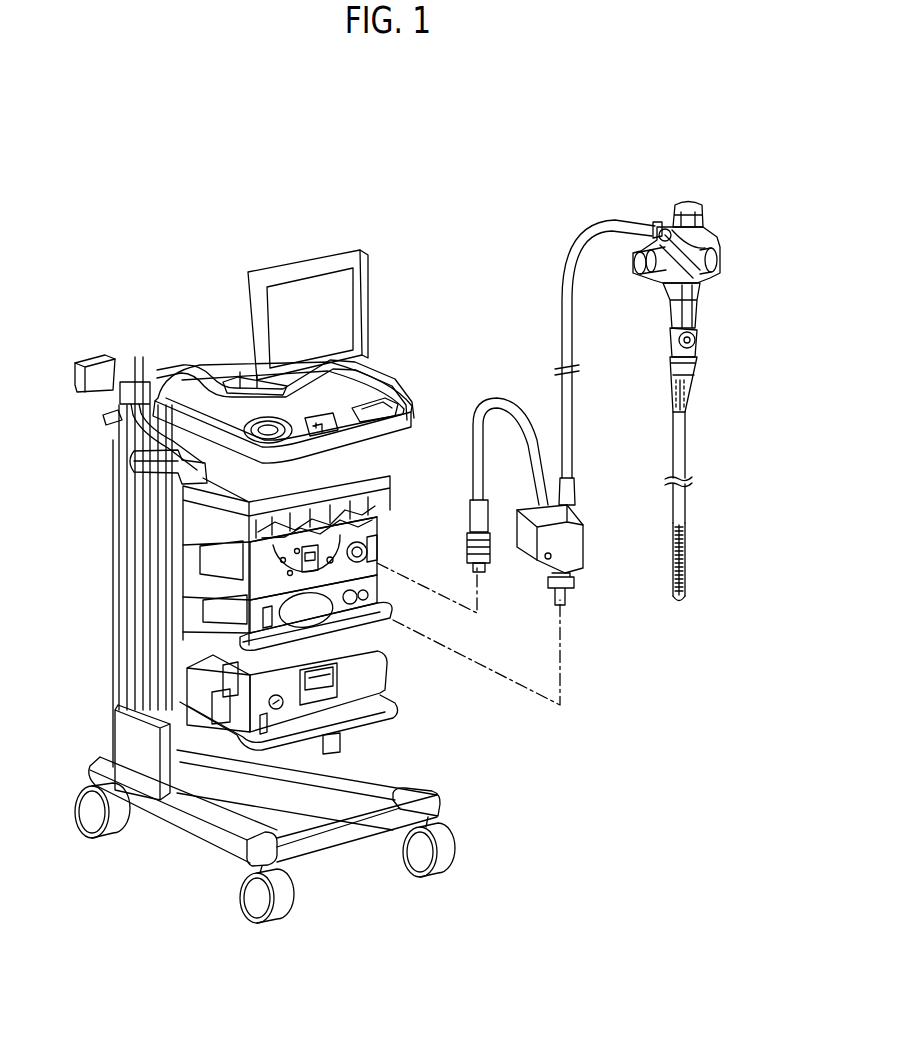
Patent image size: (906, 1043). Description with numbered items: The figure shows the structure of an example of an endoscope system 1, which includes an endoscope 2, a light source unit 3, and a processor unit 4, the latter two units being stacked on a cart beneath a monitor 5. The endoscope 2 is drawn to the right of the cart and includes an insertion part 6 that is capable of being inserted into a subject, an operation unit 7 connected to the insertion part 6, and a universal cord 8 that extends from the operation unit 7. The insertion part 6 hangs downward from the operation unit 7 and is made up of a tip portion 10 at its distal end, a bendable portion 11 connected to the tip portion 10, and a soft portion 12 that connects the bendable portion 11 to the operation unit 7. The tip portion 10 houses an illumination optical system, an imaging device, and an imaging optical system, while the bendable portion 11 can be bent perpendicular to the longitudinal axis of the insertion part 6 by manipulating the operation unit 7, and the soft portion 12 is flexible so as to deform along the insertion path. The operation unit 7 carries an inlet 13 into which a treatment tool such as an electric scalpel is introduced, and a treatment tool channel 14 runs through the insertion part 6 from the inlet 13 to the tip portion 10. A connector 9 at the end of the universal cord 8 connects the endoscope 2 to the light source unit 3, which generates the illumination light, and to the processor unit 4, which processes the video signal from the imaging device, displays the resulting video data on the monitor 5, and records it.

The endoscope system 1 is at (143, 171).
The endoscope 2 is at (595, 211).
The light source unit 3 is at (197, 592).
The processor unit 4 is at (197, 552).
The monitor 5 is at (312, 290).
The insertion part 6 is at (688, 500).
The operation unit 7 is at (716, 228).
The universal cord 8 is at (562, 315).
The connector 9 is at (477, 518).
The tip portion 10 is at (685, 600).
The bendable portion 11 is at (685, 542).
The soft portion 12 is at (673, 438).
The inlet 13 is at (700, 340).
The treatment tool channel 14 is at (690, 393).